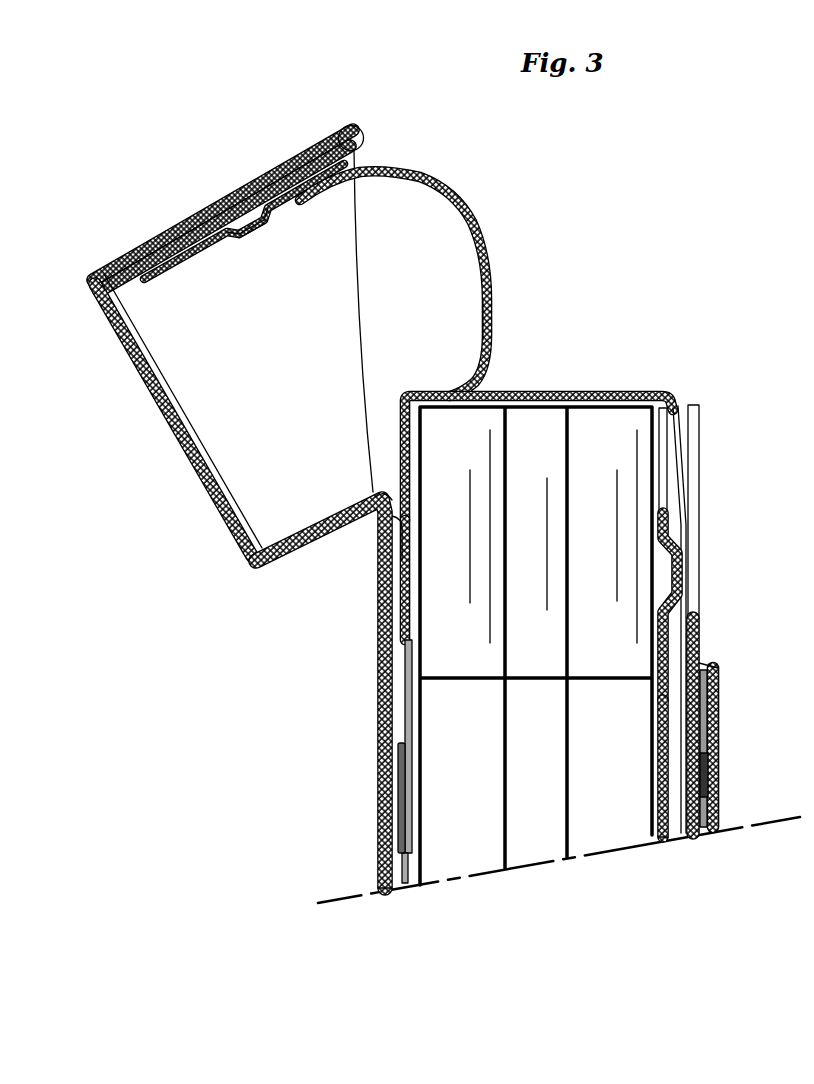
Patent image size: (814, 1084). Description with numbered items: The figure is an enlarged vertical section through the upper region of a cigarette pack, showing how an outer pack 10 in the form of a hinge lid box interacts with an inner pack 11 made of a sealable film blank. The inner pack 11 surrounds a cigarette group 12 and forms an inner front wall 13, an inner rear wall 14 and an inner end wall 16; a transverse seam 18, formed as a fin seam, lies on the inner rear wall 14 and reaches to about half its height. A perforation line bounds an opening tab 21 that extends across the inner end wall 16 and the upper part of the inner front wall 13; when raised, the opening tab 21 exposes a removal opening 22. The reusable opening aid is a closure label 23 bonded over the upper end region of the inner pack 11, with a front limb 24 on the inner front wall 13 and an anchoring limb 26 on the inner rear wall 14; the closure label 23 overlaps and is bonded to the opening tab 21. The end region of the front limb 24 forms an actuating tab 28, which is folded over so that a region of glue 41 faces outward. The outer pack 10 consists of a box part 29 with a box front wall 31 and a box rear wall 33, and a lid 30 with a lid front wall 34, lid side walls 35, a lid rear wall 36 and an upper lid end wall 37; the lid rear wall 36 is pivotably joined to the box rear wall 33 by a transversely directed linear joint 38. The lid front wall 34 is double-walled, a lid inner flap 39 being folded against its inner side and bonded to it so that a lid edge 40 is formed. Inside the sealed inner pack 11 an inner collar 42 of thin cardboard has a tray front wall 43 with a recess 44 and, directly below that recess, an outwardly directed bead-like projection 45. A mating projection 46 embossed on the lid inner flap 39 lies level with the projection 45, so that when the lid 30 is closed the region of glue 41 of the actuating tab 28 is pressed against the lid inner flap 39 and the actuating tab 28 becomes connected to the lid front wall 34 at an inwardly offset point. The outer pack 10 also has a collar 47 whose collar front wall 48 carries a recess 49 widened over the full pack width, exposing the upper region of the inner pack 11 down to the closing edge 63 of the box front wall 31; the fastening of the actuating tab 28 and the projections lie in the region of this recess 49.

The outer pack 10 is at (203, 690).
The inner pack 11 is at (407, 638).
The cigarette group 12 is at (583, 397).
The inner front wall 13 is at (687, 833).
The inner rear wall 14 is at (408, 698).
The inner end wall 16 is at (497, 257).
The transverse seam 18 is at (403, 808).
The opening tab 21 is at (447, 197).
The removal opening 22 is at (664, 392).
The closure label 23 is at (477, 322).
The front limb 24 is at (312, 195).
The anchoring limb 26 is at (392, 560).
The actuating tab 28 is at (244, 241).
The box part 29 is at (300, 787).
The lid 30 is at (172, 160).
The box front wall 31 is at (720, 738).
The box rear wall 33 is at (383, 862).
The lid front wall 34 is at (285, 165).
The lid side walls 35 is at (260, 417).
The lid rear wall 36 is at (318, 522).
The lid end wall 37 is at (168, 418).
The linear joint 38 is at (377, 507).
The lid inner flap 39 is at (167, 231).
The lid edge 40 is at (362, 131).
The region of glue 41 is at (270, 245).
The inner collar 42 is at (662, 712).
The tray front wall 43 is at (667, 835).
The recess 44 is at (663, 473).
The projection 45 is at (682, 557).
The mating projection 46 is at (248, 212).
The collar 47 is at (706, 638).
The collar front wall 48 is at (704, 720).
The recess 49 is at (700, 610).
The closing edge 63 is at (718, 665).